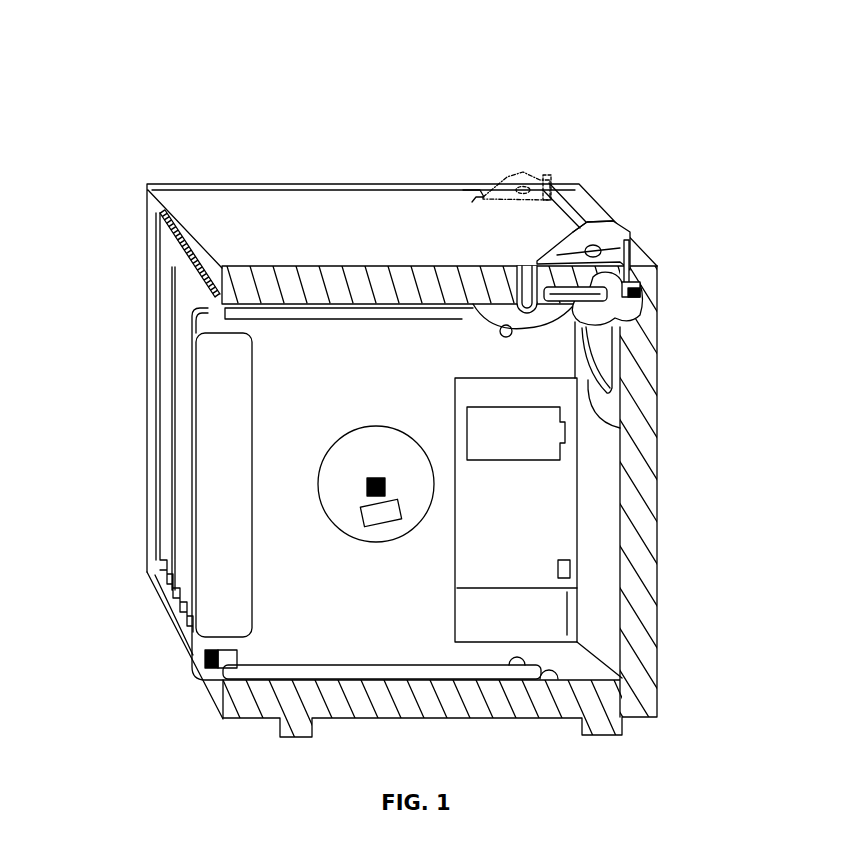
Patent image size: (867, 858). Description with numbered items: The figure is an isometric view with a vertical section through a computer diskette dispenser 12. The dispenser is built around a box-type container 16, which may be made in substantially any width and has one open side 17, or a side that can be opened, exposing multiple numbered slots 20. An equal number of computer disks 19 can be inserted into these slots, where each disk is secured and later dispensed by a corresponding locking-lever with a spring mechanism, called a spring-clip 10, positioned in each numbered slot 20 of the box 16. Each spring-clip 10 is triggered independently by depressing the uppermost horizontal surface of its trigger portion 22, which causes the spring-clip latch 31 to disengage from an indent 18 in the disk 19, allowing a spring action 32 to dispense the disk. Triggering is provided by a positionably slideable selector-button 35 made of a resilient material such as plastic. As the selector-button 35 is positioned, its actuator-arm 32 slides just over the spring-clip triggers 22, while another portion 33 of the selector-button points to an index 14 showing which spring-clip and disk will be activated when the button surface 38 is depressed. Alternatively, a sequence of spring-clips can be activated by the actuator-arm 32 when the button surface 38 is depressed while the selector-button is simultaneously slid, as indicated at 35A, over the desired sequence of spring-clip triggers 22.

The spring-clip 10 is at (608, 314).
The computer diskette dispenser 12 is at (268, 138).
The index 14 is at (488, 303).
The box-type container 16 is at (200, 184).
The open side 17 is at (183, 308).
The indent in the disk 18 is at (520, 270).
The computer disk 19 is at (225, 482).
The numbered slot 20 is at (220, 304).
The trigger portion of the spring-clip 22 is at (640, 296).
The spring-clip latch 31 is at (470, 306).
The actuator-arm 32 is at (622, 430).
The pointer portion of the selector-button 33 is at (550, 203).
The selector-button 35 is at (615, 222).
The sliding selector-button 35A is at (535, 172).
The button surface 38 is at (602, 222).